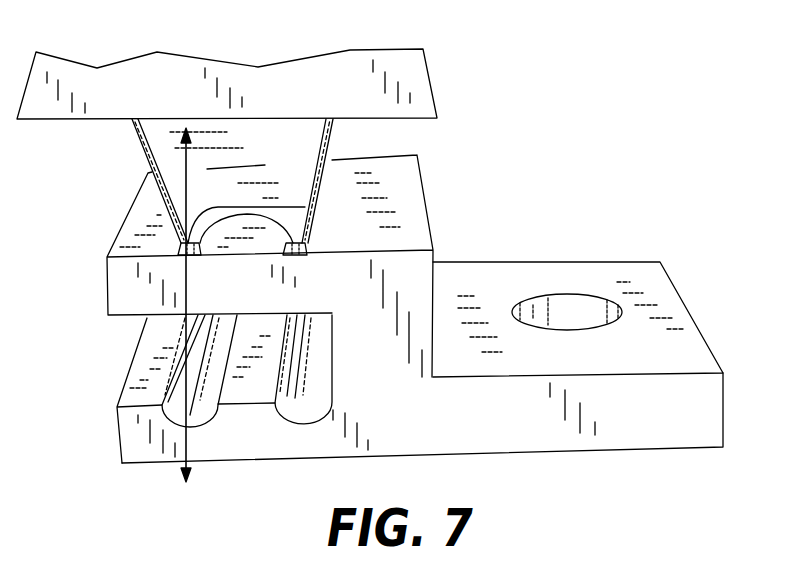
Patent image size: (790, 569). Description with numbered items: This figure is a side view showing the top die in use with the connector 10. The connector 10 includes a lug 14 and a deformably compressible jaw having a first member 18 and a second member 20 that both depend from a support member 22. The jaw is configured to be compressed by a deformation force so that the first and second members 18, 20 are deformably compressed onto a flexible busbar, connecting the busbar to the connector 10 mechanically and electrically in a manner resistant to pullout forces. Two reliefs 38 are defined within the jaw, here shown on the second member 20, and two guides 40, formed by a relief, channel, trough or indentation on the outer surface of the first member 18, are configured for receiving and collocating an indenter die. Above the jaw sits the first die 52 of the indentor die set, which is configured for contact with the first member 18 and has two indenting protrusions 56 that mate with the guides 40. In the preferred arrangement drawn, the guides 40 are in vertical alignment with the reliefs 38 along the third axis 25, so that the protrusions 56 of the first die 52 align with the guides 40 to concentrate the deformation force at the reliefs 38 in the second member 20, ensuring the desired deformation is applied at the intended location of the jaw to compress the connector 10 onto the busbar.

The connector 10 is at (530, 180).
The first die 52 is at (273, 100).
The third axis 25 is at (184, 184).
The indenting protrusions 56 is at (306, 208).
The guides 40 is at (187, 257).
The first member 18 is at (128, 289).
The second member 20 is at (134, 437).
The reliefs 38 is at (298, 423).
The support member 22 is at (436, 282).
The lug 14 is at (668, 413).